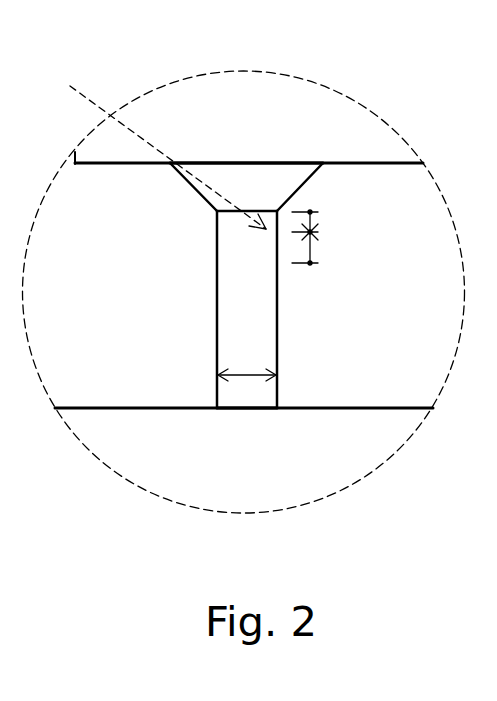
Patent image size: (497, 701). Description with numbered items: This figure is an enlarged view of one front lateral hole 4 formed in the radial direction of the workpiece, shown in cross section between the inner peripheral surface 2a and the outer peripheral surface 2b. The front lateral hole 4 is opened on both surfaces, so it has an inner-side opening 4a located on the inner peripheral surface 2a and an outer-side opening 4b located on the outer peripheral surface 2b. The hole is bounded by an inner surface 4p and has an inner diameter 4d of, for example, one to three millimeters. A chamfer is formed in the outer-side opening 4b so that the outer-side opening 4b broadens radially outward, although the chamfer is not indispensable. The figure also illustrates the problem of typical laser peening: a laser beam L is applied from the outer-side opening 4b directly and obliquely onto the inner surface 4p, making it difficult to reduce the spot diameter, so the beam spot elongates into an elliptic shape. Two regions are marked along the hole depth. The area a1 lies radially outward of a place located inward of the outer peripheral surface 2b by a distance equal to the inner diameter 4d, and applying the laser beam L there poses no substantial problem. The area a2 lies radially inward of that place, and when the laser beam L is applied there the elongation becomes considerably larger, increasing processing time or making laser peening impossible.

The inner peripheral surface 2a is at (348, 408).
The outer peripheral surface 2b is at (377, 163).
The front lateral hole 4 is at (281, 292).
The inner-side opening 4a is at (247, 408).
The outer-side opening 4b is at (243, 163).
The inner surface 4p is at (217, 300).
The inner diameter 4d is at (247, 358).
The laser beam L is at (84, 96).
The area close to the outer-side opening a1 is at (312, 217).
The area distant from the outer-side opening a2 is at (312, 248).